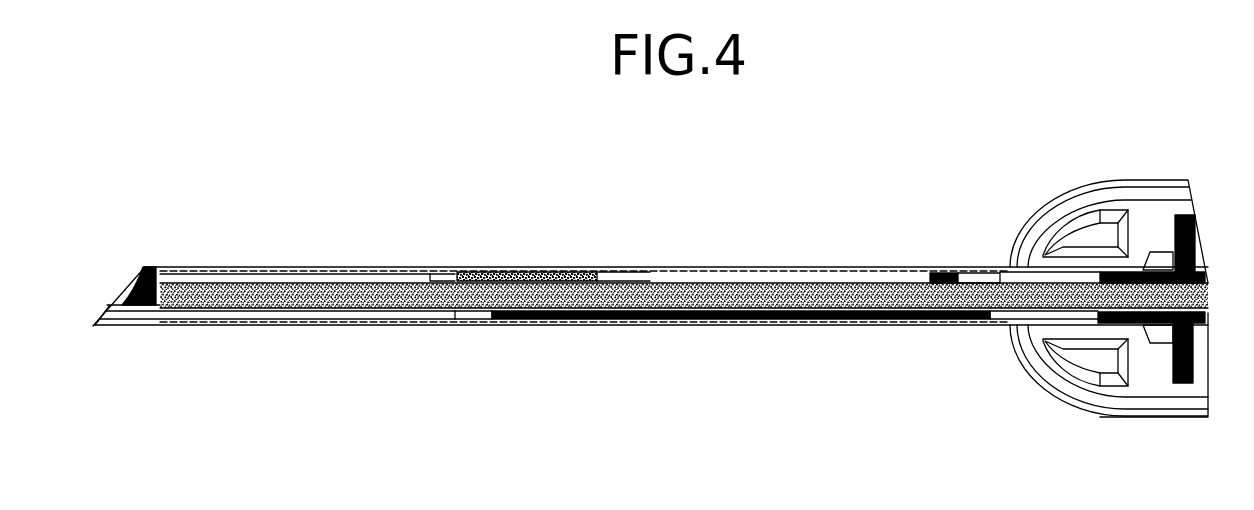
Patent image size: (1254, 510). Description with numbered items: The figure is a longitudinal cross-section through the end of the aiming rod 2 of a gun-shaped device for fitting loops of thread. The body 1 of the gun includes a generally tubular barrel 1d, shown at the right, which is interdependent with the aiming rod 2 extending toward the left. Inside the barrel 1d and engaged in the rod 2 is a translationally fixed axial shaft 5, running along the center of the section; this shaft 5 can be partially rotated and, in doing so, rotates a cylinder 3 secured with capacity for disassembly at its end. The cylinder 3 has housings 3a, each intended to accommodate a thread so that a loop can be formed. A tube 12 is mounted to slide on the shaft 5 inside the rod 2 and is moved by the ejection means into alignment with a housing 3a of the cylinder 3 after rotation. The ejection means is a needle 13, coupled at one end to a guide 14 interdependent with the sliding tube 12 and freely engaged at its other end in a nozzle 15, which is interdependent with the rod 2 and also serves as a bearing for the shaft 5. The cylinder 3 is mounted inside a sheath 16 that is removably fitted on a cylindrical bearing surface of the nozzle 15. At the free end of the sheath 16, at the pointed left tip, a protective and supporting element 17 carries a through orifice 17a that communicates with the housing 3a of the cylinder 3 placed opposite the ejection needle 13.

The body 1 is at (1080, 430).
The barrel 1d is at (1160, 185).
The aiming rod 2 is at (757, 238).
The cylinder 3 is at (312, 275).
The housing 3a is at (360, 317).
The axial shaft 5 is at (847, 300).
The tube 12 is at (1017, 310).
The needle 13 is at (606, 318).
The guide 14 is at (952, 283).
The nozzle 15 is at (505, 282).
The sheath 16 is at (228, 323).
The protective and supporting element 17 is at (140, 305).
The through orifice 17a is at (118, 298).